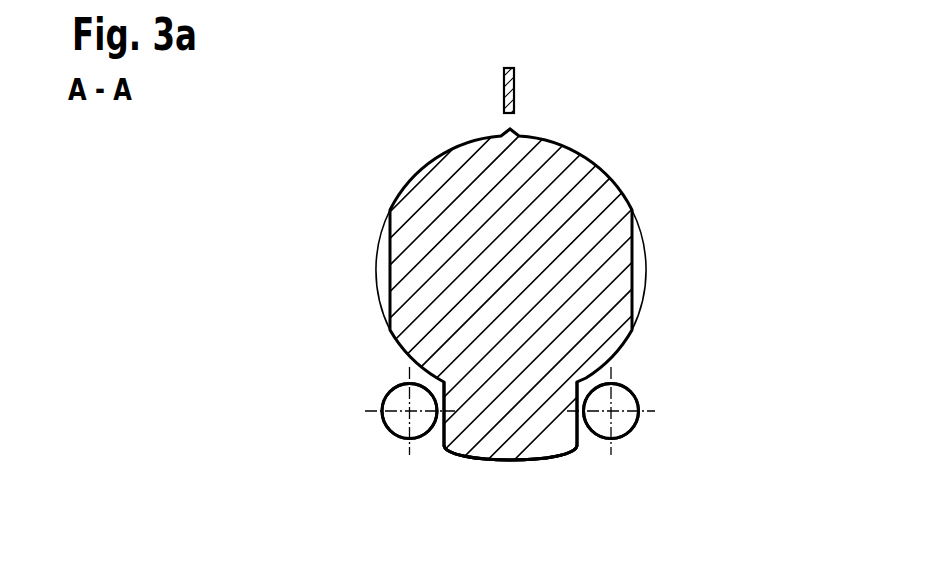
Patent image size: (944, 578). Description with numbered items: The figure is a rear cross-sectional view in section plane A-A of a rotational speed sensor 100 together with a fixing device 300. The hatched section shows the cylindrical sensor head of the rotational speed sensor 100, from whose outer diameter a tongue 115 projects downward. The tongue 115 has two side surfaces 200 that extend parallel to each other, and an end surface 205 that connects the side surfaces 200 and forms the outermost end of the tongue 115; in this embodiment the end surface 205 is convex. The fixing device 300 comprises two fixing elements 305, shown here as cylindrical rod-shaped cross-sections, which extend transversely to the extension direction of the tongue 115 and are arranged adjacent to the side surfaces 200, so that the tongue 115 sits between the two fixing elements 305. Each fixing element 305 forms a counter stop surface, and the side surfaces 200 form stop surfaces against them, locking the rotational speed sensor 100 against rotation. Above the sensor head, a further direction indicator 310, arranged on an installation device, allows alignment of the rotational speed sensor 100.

The rotational speed sensor 100 is at (720, 113).
The tongue 115 is at (482, 459).
The side surfaces 200 is at (439, 435).
The end surface 205 is at (521, 475).
The fixing device 300 is at (648, 427).
The fixing elements 305 is at (390, 402).
The further direction indicator 310 is at (482, 107).